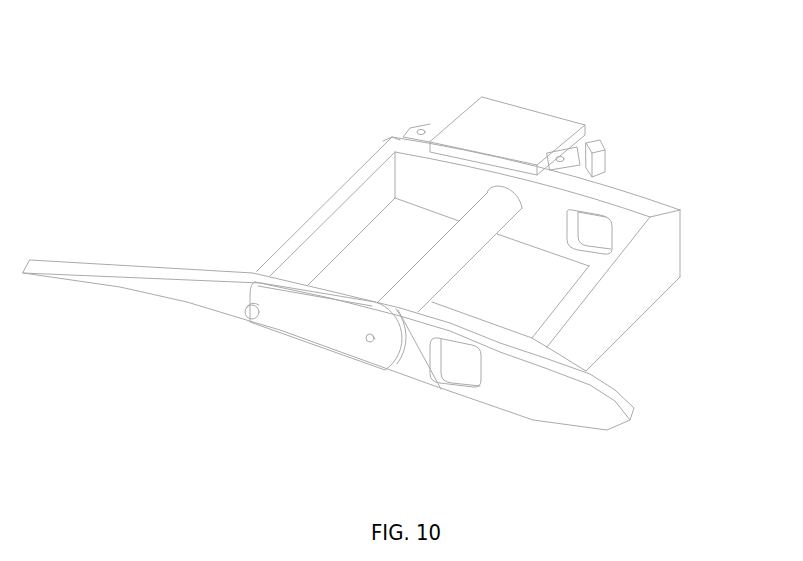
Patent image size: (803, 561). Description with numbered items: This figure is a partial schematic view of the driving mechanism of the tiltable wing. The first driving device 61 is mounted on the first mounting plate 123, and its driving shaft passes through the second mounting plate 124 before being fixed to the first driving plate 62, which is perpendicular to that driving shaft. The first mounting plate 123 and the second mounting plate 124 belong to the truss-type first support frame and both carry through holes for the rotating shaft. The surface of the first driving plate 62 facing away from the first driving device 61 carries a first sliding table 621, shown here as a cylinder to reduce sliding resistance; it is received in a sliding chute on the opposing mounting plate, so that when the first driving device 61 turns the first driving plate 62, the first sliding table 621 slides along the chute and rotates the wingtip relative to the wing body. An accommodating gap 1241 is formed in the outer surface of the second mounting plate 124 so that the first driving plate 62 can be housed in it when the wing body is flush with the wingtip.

The first driving device 61 is at (503, 120).
The first driving plate 62 is at (328, 318).
The first sliding table 621 is at (250, 313).
The first mounting plate 123 is at (622, 197).
The second mounting plate 124 is at (528, 397).
The accommodating gap 1241 is at (412, 368).